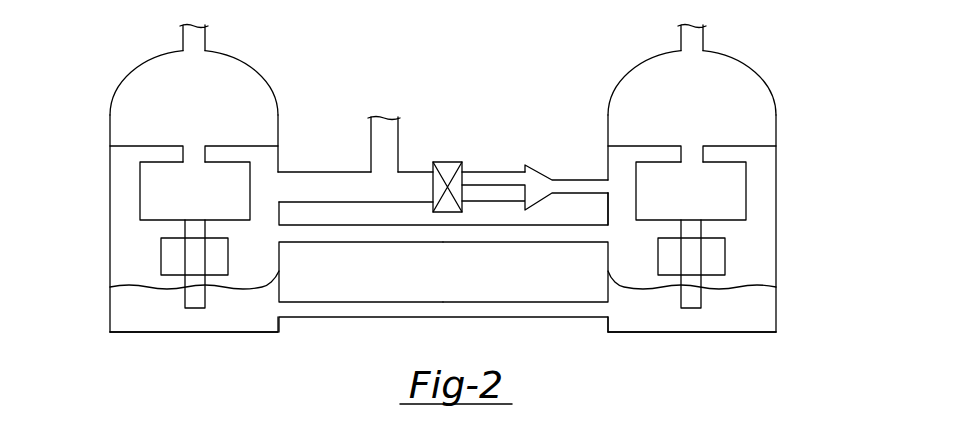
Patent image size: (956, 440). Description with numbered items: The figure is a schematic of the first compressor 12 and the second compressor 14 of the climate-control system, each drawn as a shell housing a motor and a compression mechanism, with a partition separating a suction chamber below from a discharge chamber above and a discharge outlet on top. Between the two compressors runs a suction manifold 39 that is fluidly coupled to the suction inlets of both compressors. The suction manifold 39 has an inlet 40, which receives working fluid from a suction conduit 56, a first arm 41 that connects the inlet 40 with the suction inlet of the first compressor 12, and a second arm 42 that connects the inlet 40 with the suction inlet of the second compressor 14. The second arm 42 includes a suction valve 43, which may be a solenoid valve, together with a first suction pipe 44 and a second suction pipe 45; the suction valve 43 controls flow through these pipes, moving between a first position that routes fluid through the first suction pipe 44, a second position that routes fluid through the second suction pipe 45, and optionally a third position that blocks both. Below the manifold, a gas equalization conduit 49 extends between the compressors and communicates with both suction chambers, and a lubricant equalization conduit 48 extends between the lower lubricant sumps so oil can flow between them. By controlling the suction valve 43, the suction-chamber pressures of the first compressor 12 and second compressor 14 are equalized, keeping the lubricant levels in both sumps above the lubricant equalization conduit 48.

The first compressor 12 is at (80, 140).
The second compressor 14 is at (807, 140).
The suction manifold 39 is at (418, 162).
The inlet 40 is at (383, 168).
The first arm 41 is at (337, 183).
The second arm 42 is at (478, 162).
The suction valve 43 is at (444, 162).
The first suction pipe 44 is at (507, 173).
The second suction pipe 45 is at (492, 205).
The lubricant equalization conduit 48 is at (313, 317).
The gas equalization conduit 49 is at (355, 235).
The suction conduit 56 is at (367, 117).